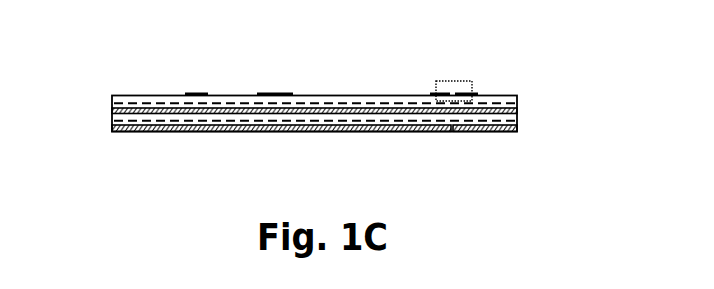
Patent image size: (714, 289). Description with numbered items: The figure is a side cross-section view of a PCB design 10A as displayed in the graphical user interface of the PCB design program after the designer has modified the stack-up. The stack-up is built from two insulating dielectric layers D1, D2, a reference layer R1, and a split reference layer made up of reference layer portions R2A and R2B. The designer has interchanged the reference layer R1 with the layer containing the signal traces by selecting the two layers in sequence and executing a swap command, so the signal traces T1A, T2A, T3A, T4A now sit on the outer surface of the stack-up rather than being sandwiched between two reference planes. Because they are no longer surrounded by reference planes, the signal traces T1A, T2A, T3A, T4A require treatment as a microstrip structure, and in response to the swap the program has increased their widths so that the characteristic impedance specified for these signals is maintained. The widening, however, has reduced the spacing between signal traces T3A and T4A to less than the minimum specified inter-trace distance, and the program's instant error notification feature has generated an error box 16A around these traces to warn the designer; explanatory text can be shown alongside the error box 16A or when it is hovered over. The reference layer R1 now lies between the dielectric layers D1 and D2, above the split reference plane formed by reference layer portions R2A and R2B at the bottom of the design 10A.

The PCB design 10A is at (189, 54).
The error box 16A is at (450, 80).
The signal trace T1A is at (190, 93).
The signal trace T2A is at (275, 93).
The signal trace T3A is at (432, 92).
The signal trace T4A is at (477, 93).
The insulating dielectric layer D1 is at (517, 97).
The reference layer R1 is at (517, 110).
The insulating dielectric layer D2 is at (517, 120).
The reference layer portion R2A is at (112, 128).
The reference layer portion R2B is at (517, 132).